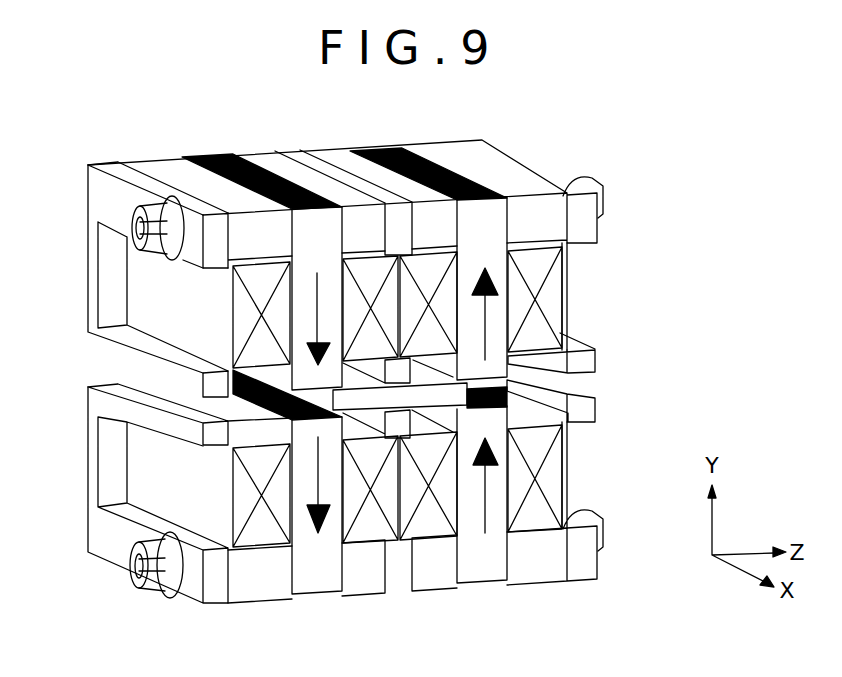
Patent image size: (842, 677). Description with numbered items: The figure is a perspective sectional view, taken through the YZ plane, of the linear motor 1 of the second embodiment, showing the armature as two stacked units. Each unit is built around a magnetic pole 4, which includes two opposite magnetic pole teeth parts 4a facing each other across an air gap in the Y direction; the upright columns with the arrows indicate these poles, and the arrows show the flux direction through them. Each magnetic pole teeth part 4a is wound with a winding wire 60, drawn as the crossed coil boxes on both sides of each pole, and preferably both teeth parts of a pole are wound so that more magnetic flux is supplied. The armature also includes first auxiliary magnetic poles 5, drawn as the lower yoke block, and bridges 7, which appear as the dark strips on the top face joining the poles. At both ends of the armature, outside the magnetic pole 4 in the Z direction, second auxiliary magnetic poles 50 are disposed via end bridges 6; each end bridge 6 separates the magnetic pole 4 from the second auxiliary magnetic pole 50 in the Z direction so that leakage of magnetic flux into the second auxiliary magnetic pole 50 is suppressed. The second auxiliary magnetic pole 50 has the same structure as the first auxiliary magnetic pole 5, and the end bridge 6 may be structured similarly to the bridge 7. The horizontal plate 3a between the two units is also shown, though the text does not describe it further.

The linear motor 1 is at (688, 624).
The base plate 3a is at (440, 396).
The magnetic pole 4 is at (318, 583).
The magnetic pole teeth part 4a is at (228, 373).
The first auxiliary magnetic pole 5 is at (398, 578).
The end bridge 6 is at (190, 180).
The bridge 7 is at (358, 168).
The second auxiliary magnetic pole 50 is at (192, 357).
The winding wire 60 is at (187, 316).